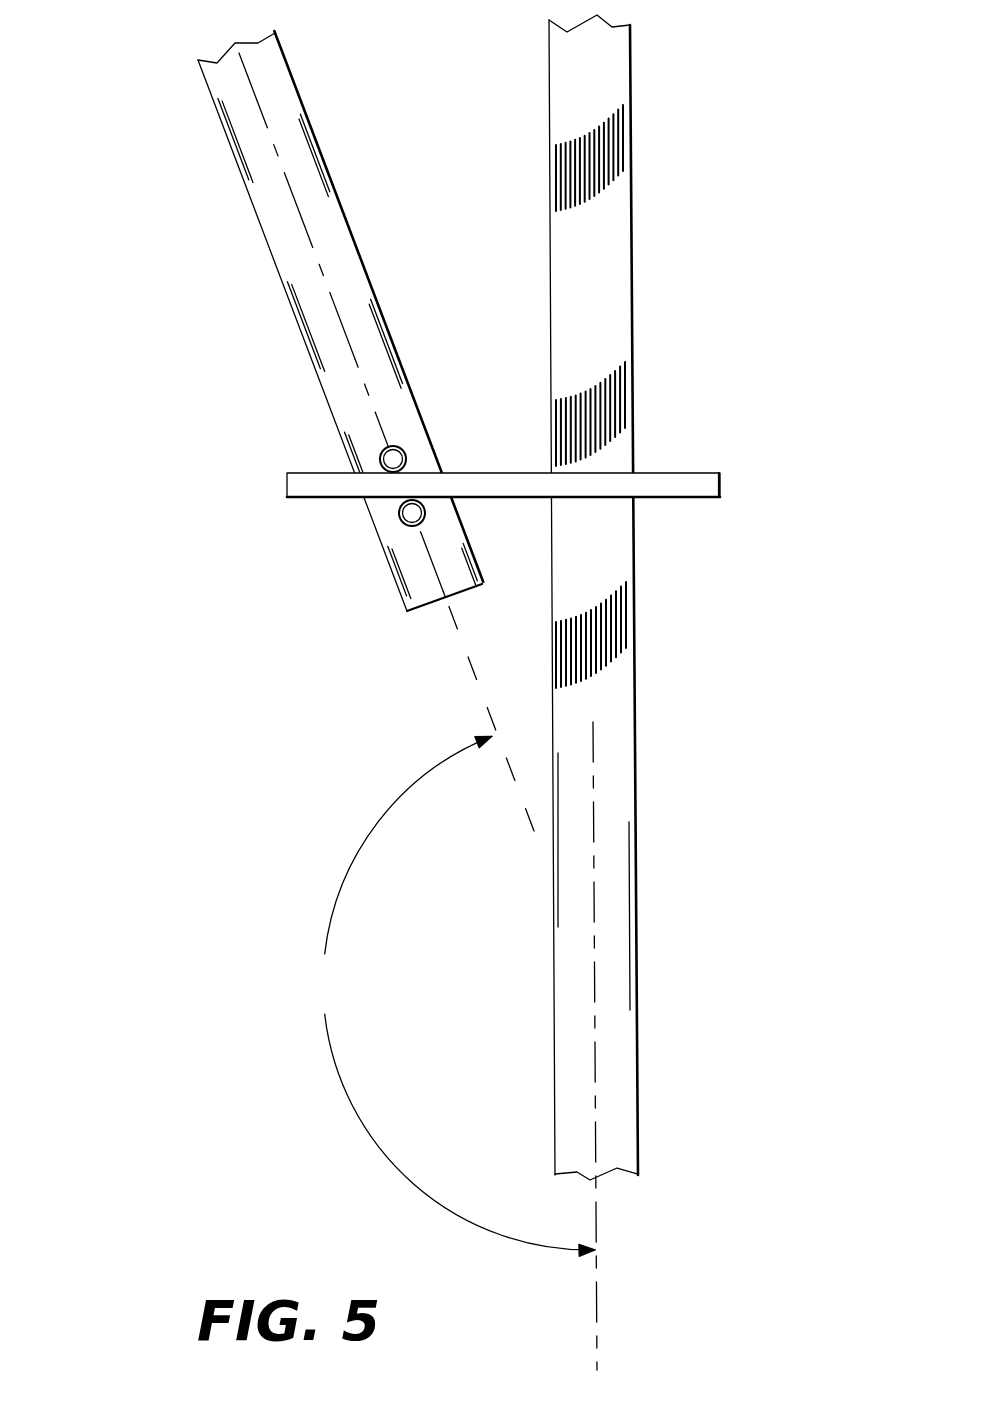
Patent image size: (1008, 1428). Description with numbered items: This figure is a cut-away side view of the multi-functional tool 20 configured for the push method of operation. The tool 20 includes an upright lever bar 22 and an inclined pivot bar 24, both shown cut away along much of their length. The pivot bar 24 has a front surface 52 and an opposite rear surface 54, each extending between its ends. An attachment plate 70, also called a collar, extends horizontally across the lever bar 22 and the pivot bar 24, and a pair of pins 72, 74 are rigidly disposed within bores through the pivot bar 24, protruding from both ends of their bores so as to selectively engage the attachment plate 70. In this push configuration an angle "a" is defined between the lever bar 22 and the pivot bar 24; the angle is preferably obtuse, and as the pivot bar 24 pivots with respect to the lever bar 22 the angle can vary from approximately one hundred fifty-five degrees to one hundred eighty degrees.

The multi-functional tool 20 is at (472, 685).
The lever bar 22 is at (636, 82).
The pivot bar 24 is at (376, 459).
The front surface 52 is at (322, 156).
The rear surface 54 is at (266, 240).
The attachment plate 70 is at (705, 468).
The pin 72 is at (383, 450).
The pin 74 is at (404, 524).